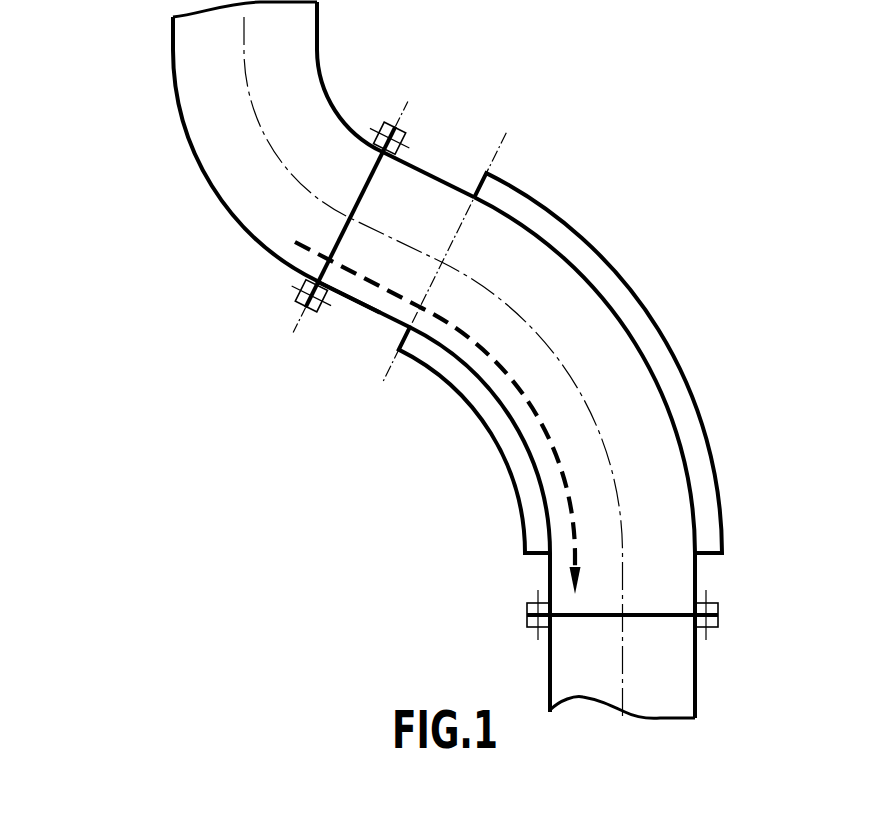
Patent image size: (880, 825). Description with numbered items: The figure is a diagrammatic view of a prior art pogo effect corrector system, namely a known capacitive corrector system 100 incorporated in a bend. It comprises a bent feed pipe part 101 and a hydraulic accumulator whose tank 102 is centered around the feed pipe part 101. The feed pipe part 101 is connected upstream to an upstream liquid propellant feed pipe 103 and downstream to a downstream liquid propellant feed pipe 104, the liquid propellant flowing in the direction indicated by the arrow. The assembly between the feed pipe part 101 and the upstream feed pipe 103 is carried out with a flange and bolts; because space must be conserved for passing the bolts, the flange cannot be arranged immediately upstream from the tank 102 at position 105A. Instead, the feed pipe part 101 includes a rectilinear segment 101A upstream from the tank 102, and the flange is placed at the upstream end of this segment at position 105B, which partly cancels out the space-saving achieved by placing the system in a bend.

The capacitive corrector system 100 is at (700, 100).
The feed pipe part 101 is at (437, 179).
The rectilinear segment 101A is at (353, 300).
The tank 102 is at (592, 238).
The upstream liquid propellant feed pipe 103 is at (318, 18).
The downstream liquid propellant feed pipe 104 is at (697, 680).
The position immediately upstream from the tank 105A is at (390, 376).
The position of the flange 105B is at (410, 100).